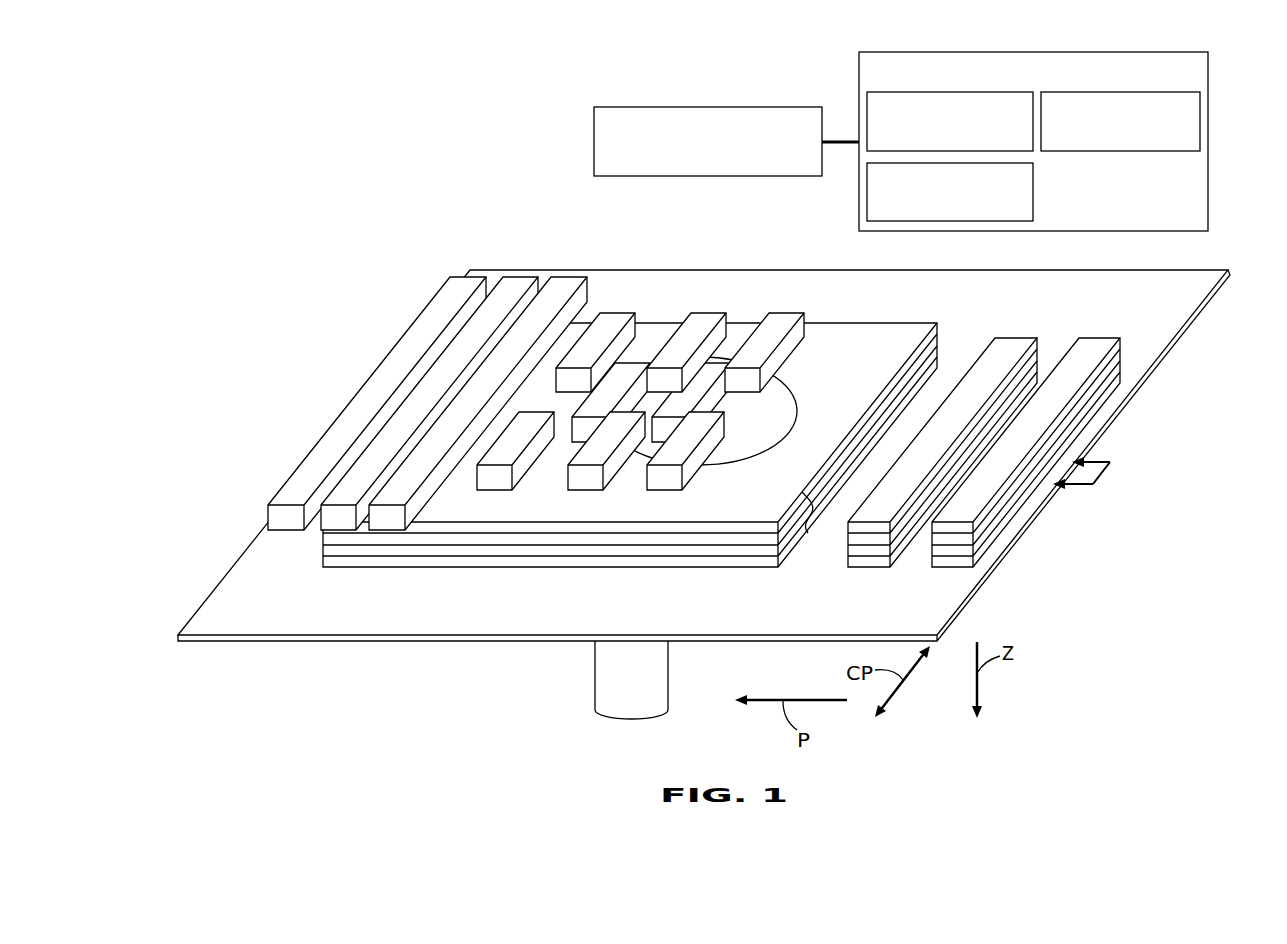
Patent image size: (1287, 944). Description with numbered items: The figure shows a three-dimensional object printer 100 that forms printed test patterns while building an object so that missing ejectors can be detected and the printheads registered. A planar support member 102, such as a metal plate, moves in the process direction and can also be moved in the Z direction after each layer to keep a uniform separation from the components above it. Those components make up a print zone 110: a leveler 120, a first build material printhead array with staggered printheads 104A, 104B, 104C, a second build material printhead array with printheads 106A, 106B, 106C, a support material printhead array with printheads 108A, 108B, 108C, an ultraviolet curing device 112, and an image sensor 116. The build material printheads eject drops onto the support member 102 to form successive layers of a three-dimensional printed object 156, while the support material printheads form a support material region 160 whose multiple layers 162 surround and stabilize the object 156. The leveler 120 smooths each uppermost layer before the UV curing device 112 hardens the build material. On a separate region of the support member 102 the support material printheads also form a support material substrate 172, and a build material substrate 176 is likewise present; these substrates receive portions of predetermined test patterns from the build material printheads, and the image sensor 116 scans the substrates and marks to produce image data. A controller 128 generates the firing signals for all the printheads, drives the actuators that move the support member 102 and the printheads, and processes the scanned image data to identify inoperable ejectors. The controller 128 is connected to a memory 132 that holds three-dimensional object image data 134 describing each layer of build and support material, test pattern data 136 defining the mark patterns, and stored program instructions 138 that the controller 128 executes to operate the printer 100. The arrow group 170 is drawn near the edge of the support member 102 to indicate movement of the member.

The three-dimensional object printer 100 is at (395, 152).
The support member 102 is at (1132, 270).
The print zone 110 is at (572, 200).
The UV curing device 112 is at (523, 276).
The image sensor 116 is at (457, 276).
The leveler 120 is at (568, 276).
The printhead 104A is at (768, 313).
The printhead 104B is at (725, 330).
The printhead 104C is at (665, 478).
The printhead 106A is at (688, 313).
The printhead 106B is at (585, 430).
The printhead 106C is at (585, 478).
The printhead 108A is at (600, 313).
The printhead 108B is at (492, 432).
The printhead 108C is at (493, 480).
The controller 128 is at (708, 106).
The memory 132 is at (858, 72).
The 3D object image data 134 is at (908, 92).
The test pattern data 136 is at (1120, 92).
The stored program instructions 138 is at (866, 198).
The three-dimensional printed object 156 is at (718, 462).
The support material 160 is at (897, 343).
The layers of support material 162 is at (812, 515).
The direction of movement 170 is at (1097, 483).
The support material substrate 172 is at (1100, 337).
The build material substrate 176 is at (1018, 337).